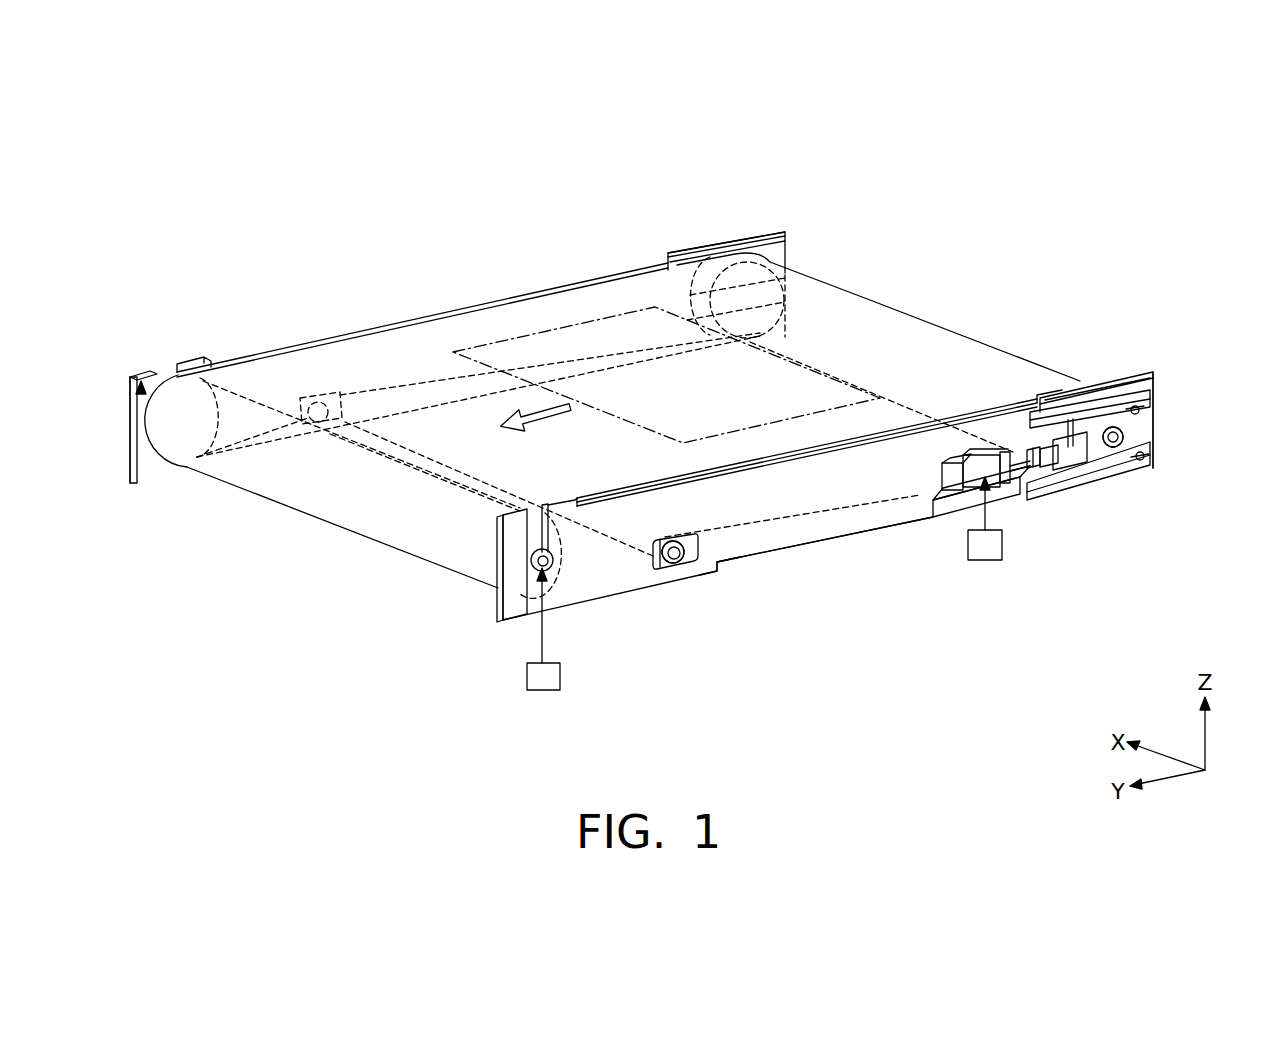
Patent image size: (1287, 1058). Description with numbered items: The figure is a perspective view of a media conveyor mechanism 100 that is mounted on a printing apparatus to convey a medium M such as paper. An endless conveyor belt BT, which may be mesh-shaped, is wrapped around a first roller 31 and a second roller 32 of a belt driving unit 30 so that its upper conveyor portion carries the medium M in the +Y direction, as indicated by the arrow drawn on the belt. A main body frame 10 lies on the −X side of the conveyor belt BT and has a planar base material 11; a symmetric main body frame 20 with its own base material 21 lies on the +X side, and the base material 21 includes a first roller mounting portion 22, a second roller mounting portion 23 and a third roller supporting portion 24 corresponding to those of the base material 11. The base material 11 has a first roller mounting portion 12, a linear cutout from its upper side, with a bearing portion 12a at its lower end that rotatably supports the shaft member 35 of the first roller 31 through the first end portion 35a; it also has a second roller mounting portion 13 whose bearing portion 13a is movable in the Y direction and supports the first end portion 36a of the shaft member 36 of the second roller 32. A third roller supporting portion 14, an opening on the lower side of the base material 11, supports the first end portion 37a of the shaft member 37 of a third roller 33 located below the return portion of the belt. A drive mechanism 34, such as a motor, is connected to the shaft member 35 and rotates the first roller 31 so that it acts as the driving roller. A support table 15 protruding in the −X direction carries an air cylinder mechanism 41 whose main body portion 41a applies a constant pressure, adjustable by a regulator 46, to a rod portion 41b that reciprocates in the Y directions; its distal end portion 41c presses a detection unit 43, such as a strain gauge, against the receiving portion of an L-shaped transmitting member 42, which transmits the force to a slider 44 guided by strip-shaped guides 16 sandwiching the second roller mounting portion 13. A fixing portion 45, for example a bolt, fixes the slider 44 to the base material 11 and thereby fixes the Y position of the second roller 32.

The media conveyor mechanism 100 is at (812, 160).
The main body frame 10 is at (783, 562).
The base material 11 is at (852, 534).
The first roller mounting portion 12 is at (533, 548).
The bearing portion 12a is at (530, 560).
The second roller mounting portion 13 is at (1155, 421).
The bearing portion 13a is at (1108, 462).
The third roller supporting portion 14 is at (700, 562).
The support table 15 is at (957, 507).
The guides 16 is at (1086, 398).
The main body frame 20 is at (738, 228).
The base material 21 is at (770, 247).
The first roller mounting portion 22 is at (180, 375).
The second roller mounting portion 23 is at (797, 266).
The third roller supporting portion 24 is at (325, 400).
The belt driving unit 30 is at (138, 384).
The first roller 31 is at (132, 403).
The second roller 32 is at (688, 262).
The third roller 33 is at (655, 565).
The drive mechanism 34 is at (545, 690).
The shaft member 35 is at (540, 555).
The first end portion 35a is at (555, 563).
The shaft member 36 is at (1113, 437).
The first end portion 36a is at (1124, 438).
The shaft member 37 is at (673, 552).
The first end portion 37a is at (684, 565).
The air cylinder mechanism 41 is at (990, 250).
The main body portion 41a is at (973, 465).
The rod portion 41b is at (1017, 465).
The distal end portion 41c is at (1048, 470).
The transmitting member 42 is at (1072, 456).
The detection unit 43 is at (1032, 450).
The slider 44 is at (1112, 418).
The fixing portion 45 is at (1142, 409).
The regulator 46 is at (983, 560).
The conveyor belt BT is at (432, 343).
The medium M is at (617, 330).